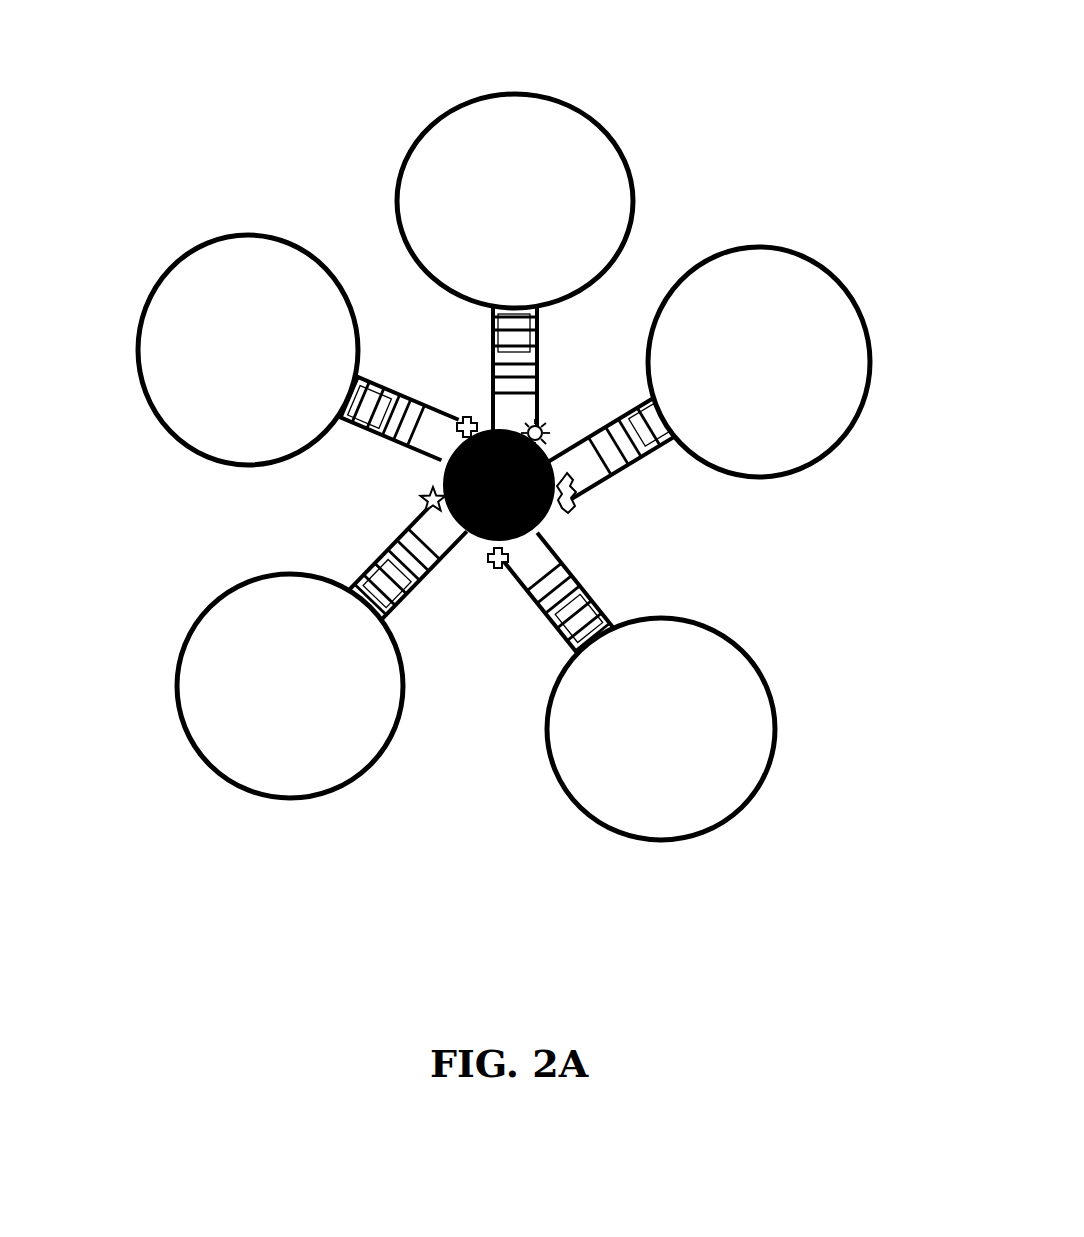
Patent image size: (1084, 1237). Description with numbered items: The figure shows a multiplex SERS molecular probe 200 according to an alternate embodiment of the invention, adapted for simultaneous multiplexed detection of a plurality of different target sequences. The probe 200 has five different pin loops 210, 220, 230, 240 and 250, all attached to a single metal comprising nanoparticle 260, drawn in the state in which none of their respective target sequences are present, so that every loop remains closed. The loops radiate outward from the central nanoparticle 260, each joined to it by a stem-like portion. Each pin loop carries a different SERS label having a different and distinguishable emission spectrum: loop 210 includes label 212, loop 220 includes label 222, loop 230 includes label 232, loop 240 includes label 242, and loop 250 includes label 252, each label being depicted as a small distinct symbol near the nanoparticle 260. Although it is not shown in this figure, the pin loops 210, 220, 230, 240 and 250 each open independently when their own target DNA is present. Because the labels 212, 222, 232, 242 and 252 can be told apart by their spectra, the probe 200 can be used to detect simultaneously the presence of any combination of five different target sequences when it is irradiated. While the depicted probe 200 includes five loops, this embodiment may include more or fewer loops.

The multiplex SERS molecular probe 200 is at (846, 108).
The pin loop 210 is at (509, 94).
The SERS label 212 is at (538, 426).
The pin loop 220 is at (869, 337).
The SERS label 222 is at (569, 506).
The pin loop 230 is at (776, 705).
The SERS label 232 is at (500, 570).
The pin loop 240 is at (178, 692).
The SERS label 242 is at (423, 500).
The pin loop 250 is at (139, 332).
The SERS label 252 is at (465, 418).
The metal comprising nanoparticle 260 is at (473, 533).